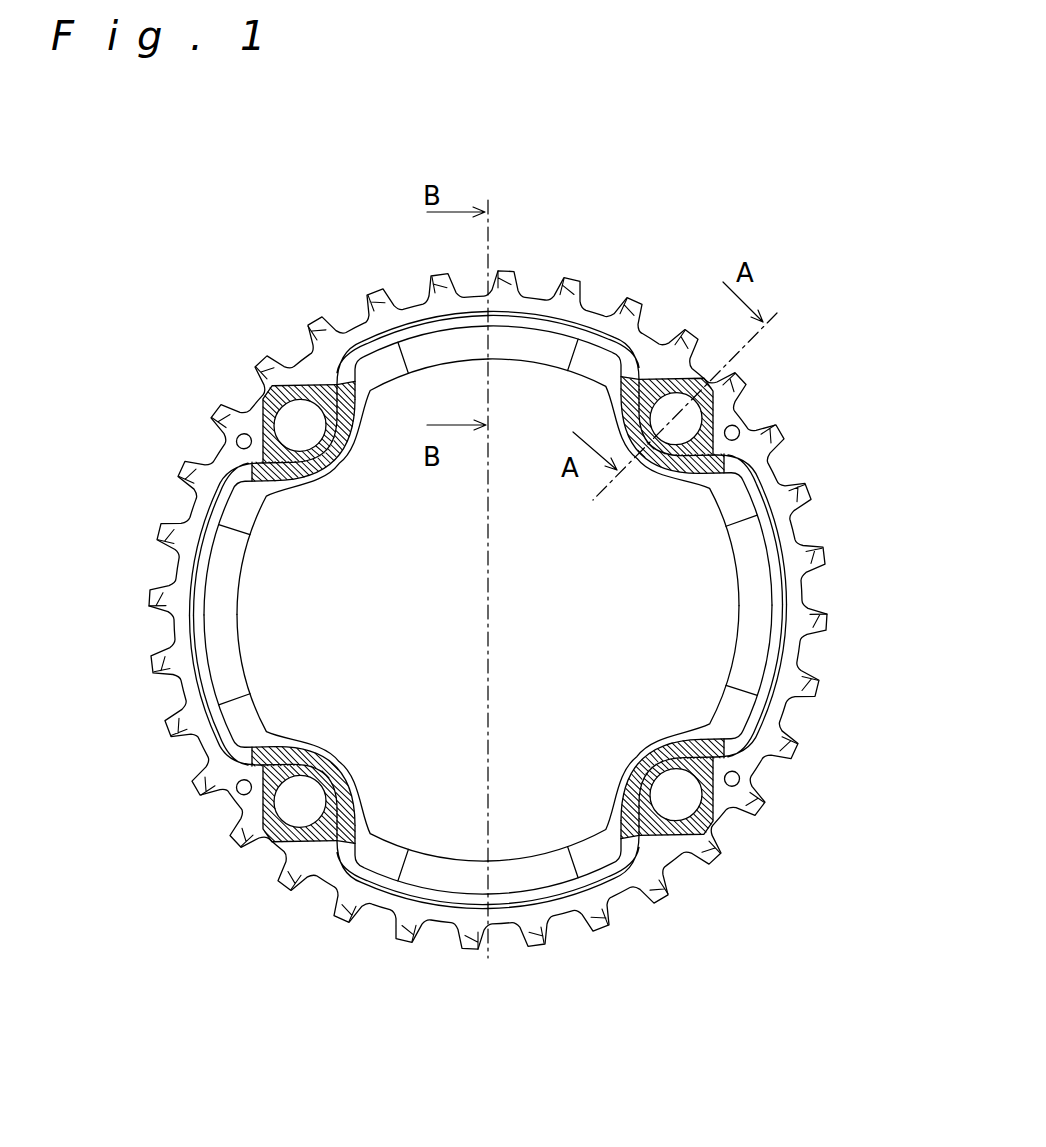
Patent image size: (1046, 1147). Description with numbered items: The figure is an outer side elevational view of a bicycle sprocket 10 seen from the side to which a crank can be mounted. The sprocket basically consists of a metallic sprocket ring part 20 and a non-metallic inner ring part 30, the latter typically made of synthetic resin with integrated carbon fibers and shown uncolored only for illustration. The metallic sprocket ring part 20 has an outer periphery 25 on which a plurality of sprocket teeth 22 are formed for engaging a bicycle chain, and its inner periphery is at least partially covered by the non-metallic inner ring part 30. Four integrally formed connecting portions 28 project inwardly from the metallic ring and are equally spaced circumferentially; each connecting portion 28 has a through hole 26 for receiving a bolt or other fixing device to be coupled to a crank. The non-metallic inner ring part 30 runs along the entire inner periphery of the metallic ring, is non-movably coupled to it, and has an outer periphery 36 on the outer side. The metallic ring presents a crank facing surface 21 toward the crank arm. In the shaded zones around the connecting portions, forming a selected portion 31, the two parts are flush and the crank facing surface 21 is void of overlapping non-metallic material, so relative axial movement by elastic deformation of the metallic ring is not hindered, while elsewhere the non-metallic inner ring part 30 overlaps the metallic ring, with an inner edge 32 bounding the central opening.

The bicycle sprocket 10 is at (821, 354).
The metallic sprocket ring part 20 is at (778, 462).
The crank facing surface 21 is at (753, 618).
The sprocket teeth 22 is at (808, 495).
The outer periphery 25 is at (803, 648).
The through hole 26 is at (716, 408).
The connecting portion 28 is at (236, 441).
The non-metallic inner ring part 30 is at (526, 343).
The selected portion 31 is at (687, 470).
The inner opening edge 32 is at (250, 659).
The outer periphery 36 is at (730, 458).